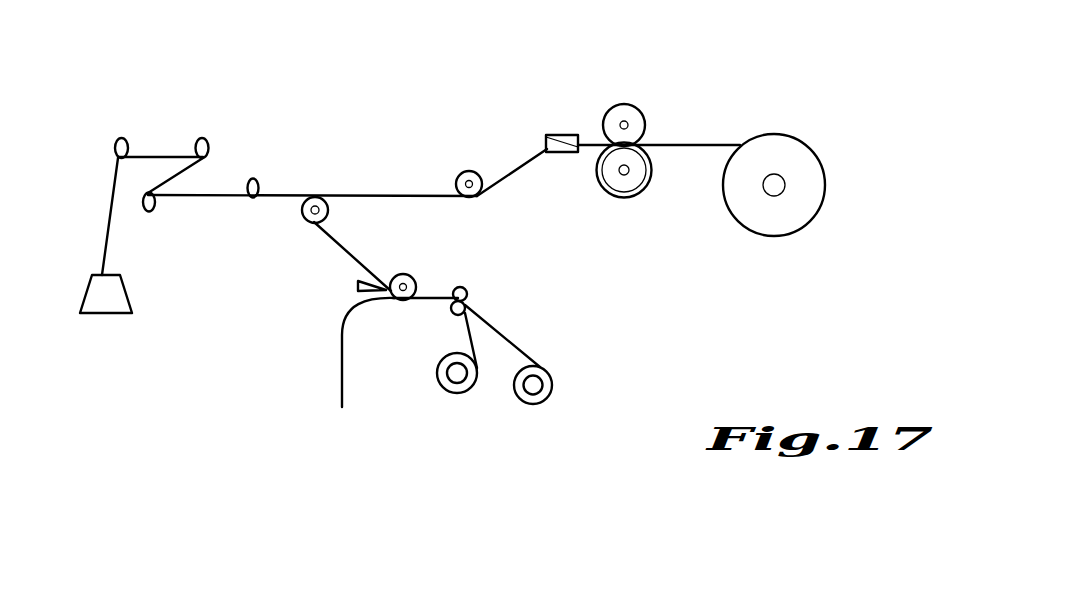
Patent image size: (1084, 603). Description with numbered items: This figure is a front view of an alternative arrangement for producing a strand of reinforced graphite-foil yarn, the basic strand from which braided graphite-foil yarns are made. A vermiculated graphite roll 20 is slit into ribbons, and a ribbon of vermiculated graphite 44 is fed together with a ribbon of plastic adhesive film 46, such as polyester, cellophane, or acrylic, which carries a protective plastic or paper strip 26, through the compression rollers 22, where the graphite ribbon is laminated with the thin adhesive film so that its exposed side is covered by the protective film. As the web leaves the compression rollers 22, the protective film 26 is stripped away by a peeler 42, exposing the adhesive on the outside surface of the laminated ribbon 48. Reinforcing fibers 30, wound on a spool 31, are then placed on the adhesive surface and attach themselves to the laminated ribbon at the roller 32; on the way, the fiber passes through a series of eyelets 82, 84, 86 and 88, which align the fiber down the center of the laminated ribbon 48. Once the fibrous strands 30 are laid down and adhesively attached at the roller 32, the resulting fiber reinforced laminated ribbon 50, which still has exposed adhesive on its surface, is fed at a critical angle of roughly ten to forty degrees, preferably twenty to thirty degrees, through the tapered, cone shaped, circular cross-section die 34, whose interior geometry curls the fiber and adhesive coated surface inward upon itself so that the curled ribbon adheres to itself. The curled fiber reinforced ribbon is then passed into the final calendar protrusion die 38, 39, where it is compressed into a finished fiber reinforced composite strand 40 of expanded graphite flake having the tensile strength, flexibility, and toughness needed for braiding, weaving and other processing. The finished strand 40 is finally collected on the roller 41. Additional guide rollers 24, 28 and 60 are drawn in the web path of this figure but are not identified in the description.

The vermiculated graphite roll 20 is at (543, 407).
The compression rollers 22 is at (468, 290).
The roller 24 is at (463, 392).
The protective plastic strip 26 is at (340, 395).
The roller 28 is at (413, 280).
The reinforcing fibers 30 is at (108, 238).
The spool 31 is at (112, 305).
The roller 32 is at (310, 195).
The cone shaped circular die 34 is at (563, 133).
The calendar protrusion die 38 is at (627, 198).
The calendar protrusion die 39 is at (630, 104).
The fiber reinforced composite strand 40 is at (715, 145).
The roller 41 is at (803, 232).
The peeler 42 is at (350, 283).
The vermiculated graphite ribbon 44 is at (500, 332).
The plastic adhesive film 46 is at (467, 335).
The laminated ribbon 48 is at (340, 248).
The fiber reinforced laminated ribbon 50 is at (417, 195).
The roller 60 is at (467, 173).
The eyelet 82 is at (120, 138).
The eyelet 84 is at (202, 138).
The eyelet 86 is at (148, 213).
The eyelet 88 is at (253, 178).